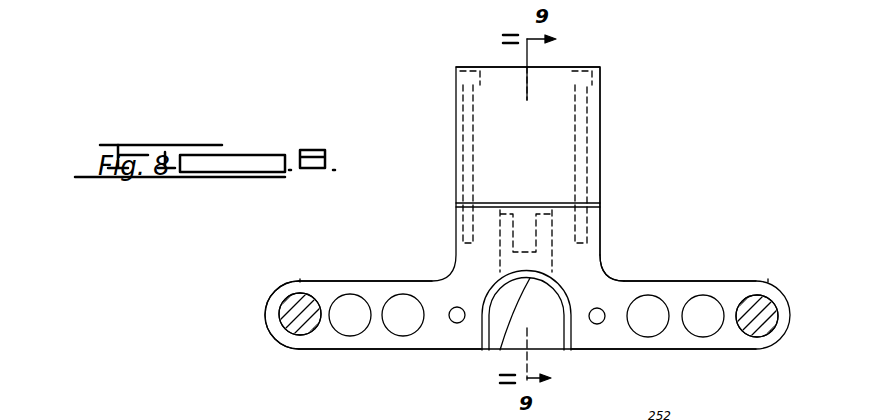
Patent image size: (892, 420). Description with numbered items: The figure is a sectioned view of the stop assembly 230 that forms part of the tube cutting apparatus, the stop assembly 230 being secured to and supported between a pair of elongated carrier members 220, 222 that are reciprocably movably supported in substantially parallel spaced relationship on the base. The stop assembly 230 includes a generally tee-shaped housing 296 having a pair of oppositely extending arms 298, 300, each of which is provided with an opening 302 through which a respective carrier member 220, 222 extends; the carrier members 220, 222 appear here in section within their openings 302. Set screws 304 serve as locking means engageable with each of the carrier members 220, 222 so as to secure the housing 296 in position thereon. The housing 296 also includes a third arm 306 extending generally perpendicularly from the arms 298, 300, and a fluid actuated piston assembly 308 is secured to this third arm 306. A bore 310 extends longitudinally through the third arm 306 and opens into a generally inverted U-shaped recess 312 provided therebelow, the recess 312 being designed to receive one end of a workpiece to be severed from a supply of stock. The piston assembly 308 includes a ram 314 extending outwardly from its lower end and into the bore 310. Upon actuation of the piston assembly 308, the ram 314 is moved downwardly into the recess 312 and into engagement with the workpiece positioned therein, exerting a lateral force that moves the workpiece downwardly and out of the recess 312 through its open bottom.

The stop assembly 230 is at (654, 158).
The fluid actuated piston assembly 308 is at (600, 81).
The third arm 306 is at (456, 214).
The arm 300 is at (352, 280).
The arm 298 is at (690, 282).
The tee-shaped housing 296 is at (603, 262).
The set screws 304 is at (290, 284).
The carrier member 222 is at (285, 306).
The carrier member 220 is at (770, 312).
The opening 302 is at (293, 323).
The bore 310 is at (505, 252).
The inverted U-shaped recess 312 is at (548, 345).
The ram 314 is at (500, 350).